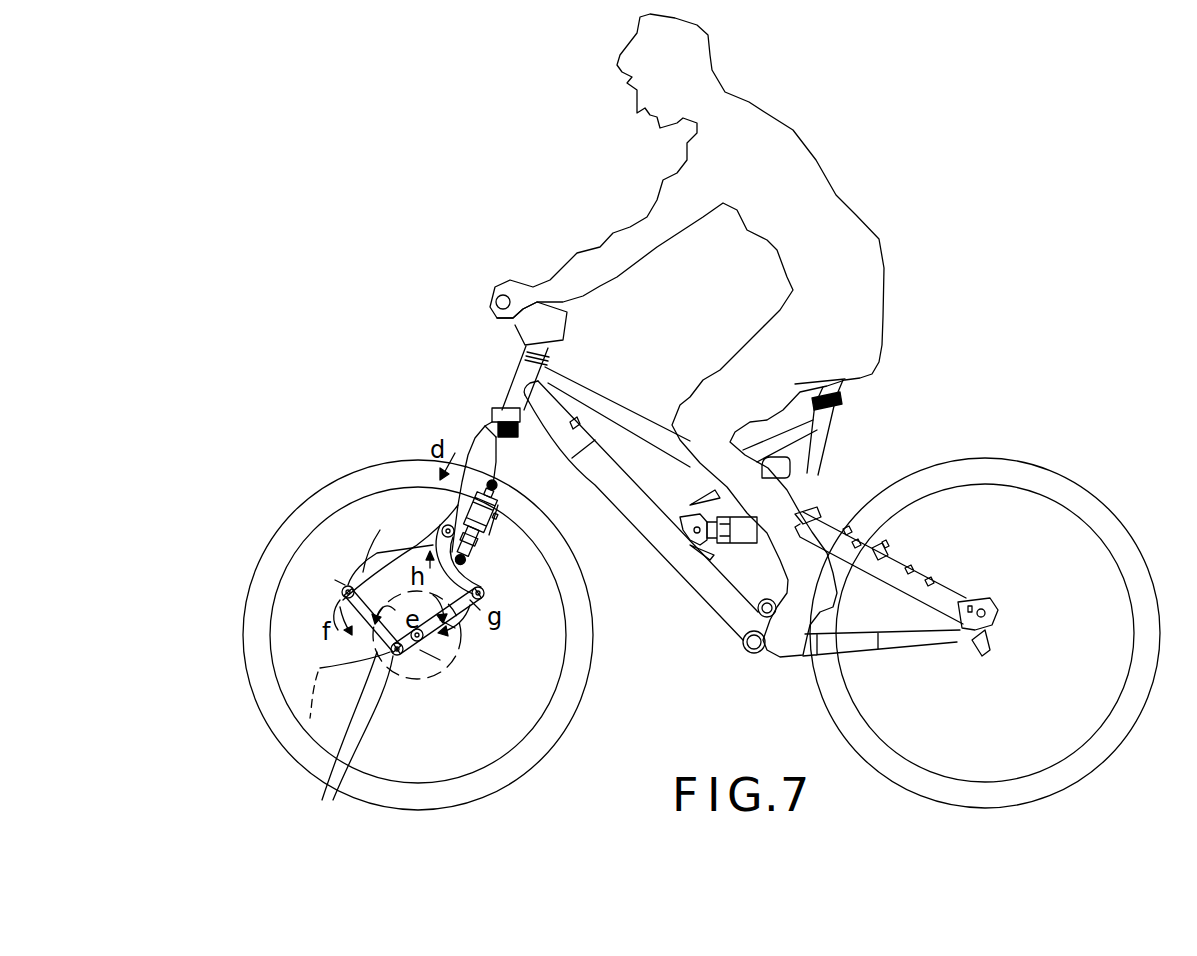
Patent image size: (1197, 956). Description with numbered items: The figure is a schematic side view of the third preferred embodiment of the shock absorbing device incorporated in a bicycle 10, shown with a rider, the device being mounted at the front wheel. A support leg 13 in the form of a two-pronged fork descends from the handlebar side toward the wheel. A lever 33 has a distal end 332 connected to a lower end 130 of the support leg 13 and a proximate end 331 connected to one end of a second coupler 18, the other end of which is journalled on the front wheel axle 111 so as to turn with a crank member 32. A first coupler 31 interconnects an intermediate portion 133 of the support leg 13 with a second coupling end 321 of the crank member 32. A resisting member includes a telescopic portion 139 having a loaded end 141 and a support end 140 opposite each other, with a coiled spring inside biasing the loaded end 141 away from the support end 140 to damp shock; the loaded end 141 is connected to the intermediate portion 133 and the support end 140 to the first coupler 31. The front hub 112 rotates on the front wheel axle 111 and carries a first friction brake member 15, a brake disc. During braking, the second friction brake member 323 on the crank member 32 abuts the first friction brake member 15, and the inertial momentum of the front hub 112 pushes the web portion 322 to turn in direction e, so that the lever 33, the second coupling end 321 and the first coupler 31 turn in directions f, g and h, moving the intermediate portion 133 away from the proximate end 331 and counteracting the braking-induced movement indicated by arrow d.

The bicycle 10 is at (905, 440).
The support leg 13 is at (387, 527).
The intermediate portion 133 is at (423, 537).
The lower end 130 is at (337, 590).
The first coupler 31 is at (357, 563).
The loaded end 141 is at (486, 520).
The telescopic portion 139 is at (470, 552).
The support end 140 is at (493, 590).
The crank member 32 is at (468, 658).
The second coupling end 321 is at (482, 588).
The web portion 322 is at (440, 640).
The second friction brake member 323 is at (410, 655).
The front wheel axle 111 is at (430, 647).
The front hub 112 is at (417, 635).
The lever 33 is at (340, 605).
The distal end 332 is at (327, 597).
The proximate end 331 is at (307, 772).
The second coupler 18 is at (333, 790).
The first friction brake member 15 is at (305, 725).